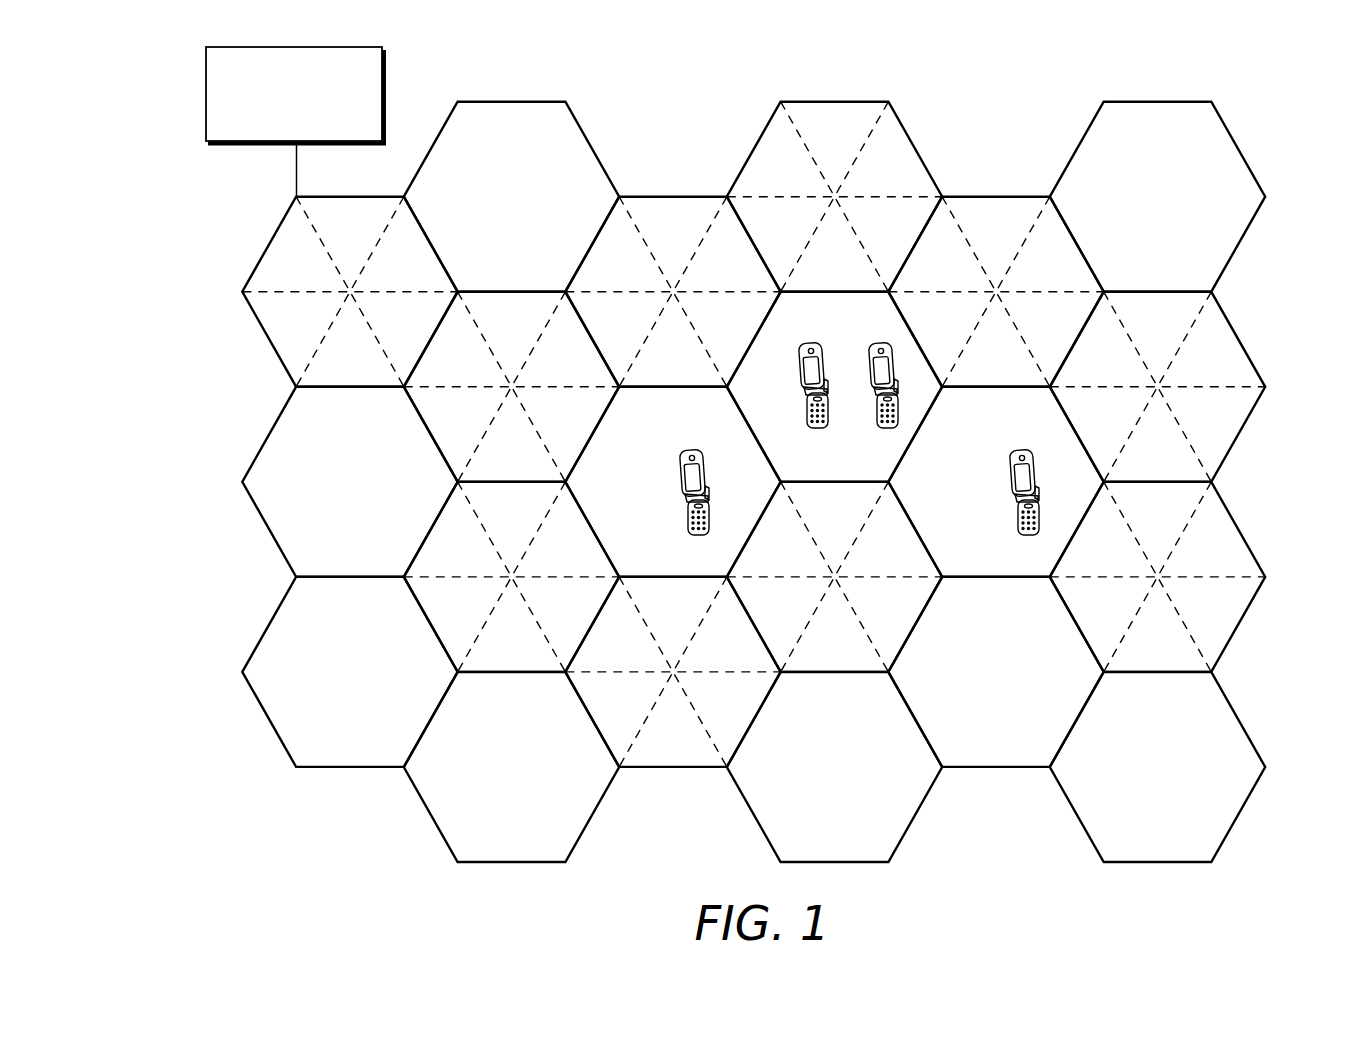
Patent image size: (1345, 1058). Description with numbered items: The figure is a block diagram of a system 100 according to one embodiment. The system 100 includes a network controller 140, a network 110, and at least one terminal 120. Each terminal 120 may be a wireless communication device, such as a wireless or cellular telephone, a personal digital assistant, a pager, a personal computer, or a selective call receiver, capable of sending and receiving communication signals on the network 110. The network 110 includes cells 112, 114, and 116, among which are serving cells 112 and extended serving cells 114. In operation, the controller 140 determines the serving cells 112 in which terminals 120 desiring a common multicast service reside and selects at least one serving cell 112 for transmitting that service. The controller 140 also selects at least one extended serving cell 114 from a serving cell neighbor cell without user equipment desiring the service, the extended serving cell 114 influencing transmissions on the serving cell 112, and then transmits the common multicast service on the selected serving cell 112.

The system 100 is at (1276, 84).
The network 110 is at (675, 157).
The serving cell 112 is at (1013, 425).
The extended serving cell 114 is at (1174, 520).
The cell 116 is at (1174, 710).
The terminal 120 is at (804, 409).
The network controller 140 is at (206, 94).